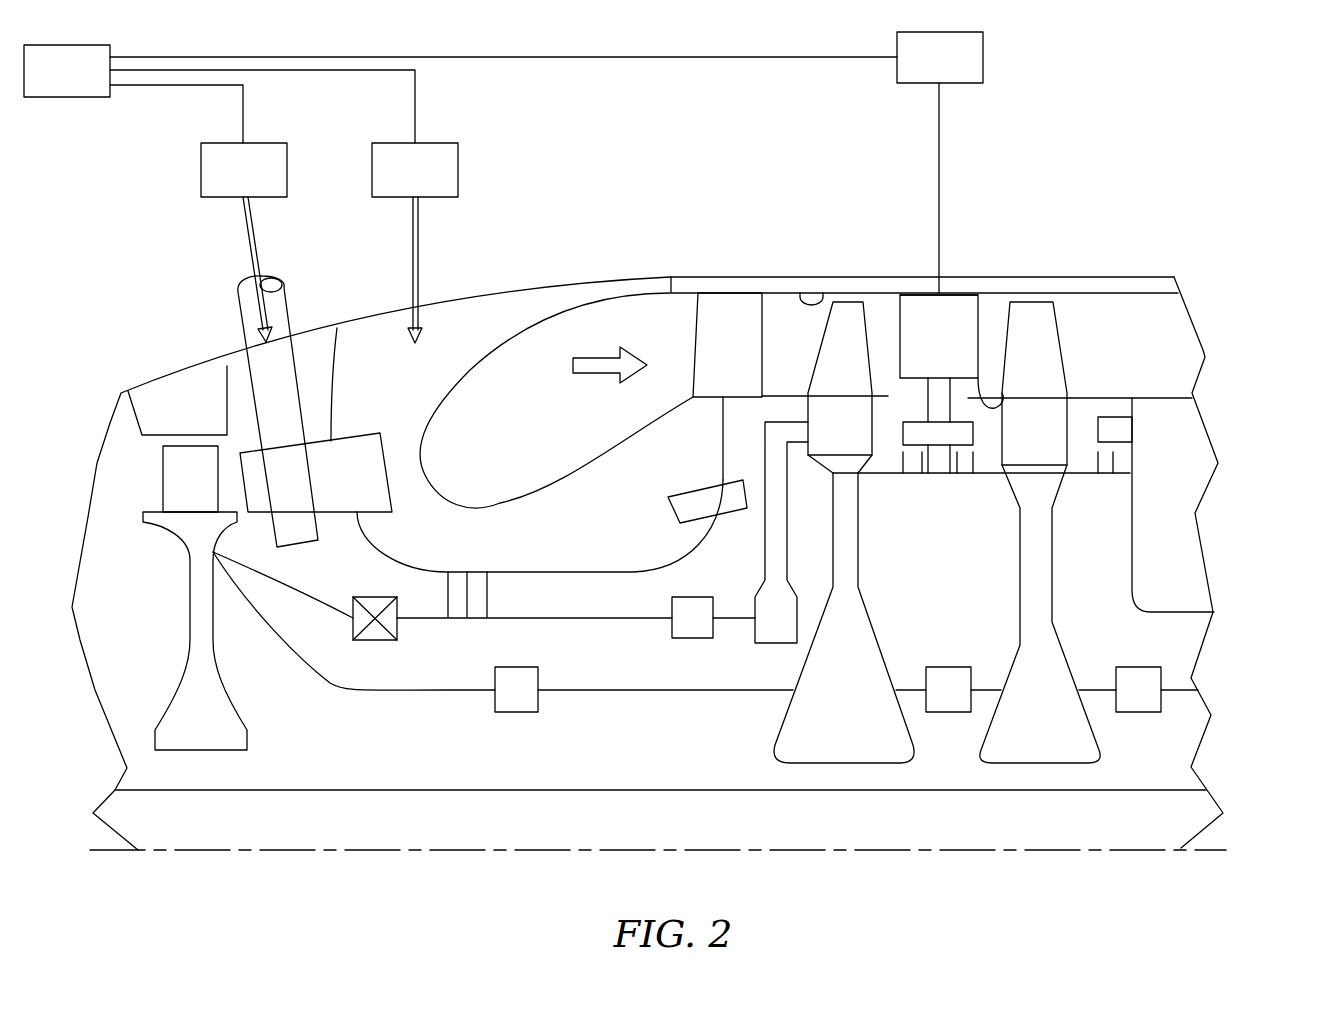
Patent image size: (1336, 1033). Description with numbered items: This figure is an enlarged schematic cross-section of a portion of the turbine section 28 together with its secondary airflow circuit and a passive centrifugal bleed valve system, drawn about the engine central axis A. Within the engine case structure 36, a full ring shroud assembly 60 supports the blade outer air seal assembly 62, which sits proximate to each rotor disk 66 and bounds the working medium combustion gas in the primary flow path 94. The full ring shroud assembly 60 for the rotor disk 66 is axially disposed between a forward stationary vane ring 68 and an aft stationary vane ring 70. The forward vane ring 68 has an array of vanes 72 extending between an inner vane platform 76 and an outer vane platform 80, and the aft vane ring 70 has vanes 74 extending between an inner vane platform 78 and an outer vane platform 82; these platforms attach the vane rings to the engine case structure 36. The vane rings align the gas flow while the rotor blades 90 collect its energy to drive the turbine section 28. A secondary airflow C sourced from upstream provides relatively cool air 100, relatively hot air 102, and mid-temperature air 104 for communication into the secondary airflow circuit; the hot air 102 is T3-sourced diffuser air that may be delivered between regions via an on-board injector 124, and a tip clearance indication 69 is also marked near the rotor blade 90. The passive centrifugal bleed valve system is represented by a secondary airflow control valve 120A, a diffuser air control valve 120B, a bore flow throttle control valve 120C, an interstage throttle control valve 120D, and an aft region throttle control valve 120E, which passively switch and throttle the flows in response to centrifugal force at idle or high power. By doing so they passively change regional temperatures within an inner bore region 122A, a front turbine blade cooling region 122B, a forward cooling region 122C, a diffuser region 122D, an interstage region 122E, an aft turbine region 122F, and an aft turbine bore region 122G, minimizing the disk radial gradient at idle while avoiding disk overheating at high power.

The secondary airflow C is at (57, 83).
The relatively cool air 100 is at (220, 186).
The relatively hot air 102 is at (392, 186).
The mid-temperature air 104 is at (917, 71).
The turbine section 28 is at (1022, 215).
The engine case structure 36 is at (960, 277).
The outer vane platform 82 is at (965, 298).
The primary flow path 94 is at (594, 352).
The forward stationary vane ring 68 is at (712, 306).
The vane 72 is at (697, 330).
The outer vane platform 80 is at (720, 293).
The inner vane platform 76 is at (702, 398).
The blade outer air seal (BOAS) assembly 62 is at (800, 293).
The rotor blade 90 is at (821, 381).
The full ring shroud assembly 60 is at (850, 296).
The blade tip clearance 69 is at (866, 302).
The rotor disk 66 is at (870, 556).
The vane 74 is at (923, 363).
The inner vane platform 78 is at (968, 398).
The aft stationary vane ring 70 is at (963, 322).
The aft turbine region 122F is at (1062, 541).
The diffuser region 122D is at (300, 584).
The on-board injector 124 is at (672, 507).
The front turbine blade cooling region 122B is at (570, 668).
The inner bore region 122A is at (588, 751).
The forward cooling region 122C is at (99, 626).
The interstage region 122E is at (930, 593).
The aft turbine bore region 122G is at (1117, 764).
The secondary airflow control valve 120A is at (373, 630).
The diffuser air control valve 120B is at (708, 633).
The bore flow throttle control valve 120C is at (500, 703).
The interstage throttle control valve 120D is at (936, 697).
The aft region throttle control valve 120E is at (1151, 697).
The engine central axis A is at (105, 852).